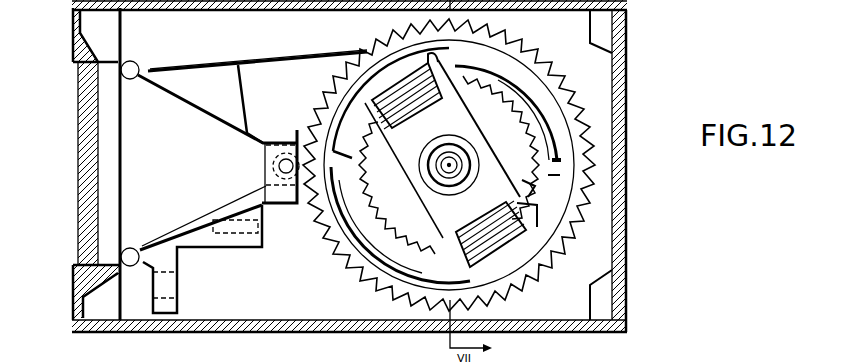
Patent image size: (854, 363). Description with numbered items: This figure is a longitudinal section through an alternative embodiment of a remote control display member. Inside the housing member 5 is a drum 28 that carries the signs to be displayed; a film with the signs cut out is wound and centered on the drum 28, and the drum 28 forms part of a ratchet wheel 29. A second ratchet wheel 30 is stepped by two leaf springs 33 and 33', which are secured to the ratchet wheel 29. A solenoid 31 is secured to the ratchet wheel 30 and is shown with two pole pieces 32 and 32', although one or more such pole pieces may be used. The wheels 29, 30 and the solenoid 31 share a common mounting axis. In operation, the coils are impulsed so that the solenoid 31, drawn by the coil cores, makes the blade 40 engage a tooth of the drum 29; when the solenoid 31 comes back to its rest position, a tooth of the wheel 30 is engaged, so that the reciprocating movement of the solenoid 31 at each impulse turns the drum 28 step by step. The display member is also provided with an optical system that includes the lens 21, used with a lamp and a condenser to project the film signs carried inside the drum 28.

The member 5 is at (80, 23).
The lens 21 is at (279, 170).
The drum 28 is at (566, 77).
The ratchet wheel 29 is at (578, 148).
The ratchet wheel 30 is at (532, 192).
The solenoid 31 is at (537, 220).
The pole piece 32 is at (527, 234).
The pole piece 32' is at (380, 73).
The leaf spring 33 is at (388, 235).
The leaf spring 33' is at (563, 113).
The blade 40 is at (268, 62).